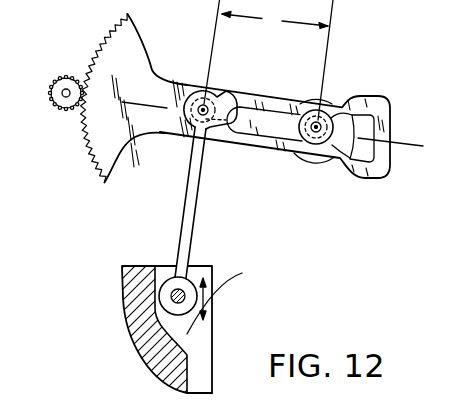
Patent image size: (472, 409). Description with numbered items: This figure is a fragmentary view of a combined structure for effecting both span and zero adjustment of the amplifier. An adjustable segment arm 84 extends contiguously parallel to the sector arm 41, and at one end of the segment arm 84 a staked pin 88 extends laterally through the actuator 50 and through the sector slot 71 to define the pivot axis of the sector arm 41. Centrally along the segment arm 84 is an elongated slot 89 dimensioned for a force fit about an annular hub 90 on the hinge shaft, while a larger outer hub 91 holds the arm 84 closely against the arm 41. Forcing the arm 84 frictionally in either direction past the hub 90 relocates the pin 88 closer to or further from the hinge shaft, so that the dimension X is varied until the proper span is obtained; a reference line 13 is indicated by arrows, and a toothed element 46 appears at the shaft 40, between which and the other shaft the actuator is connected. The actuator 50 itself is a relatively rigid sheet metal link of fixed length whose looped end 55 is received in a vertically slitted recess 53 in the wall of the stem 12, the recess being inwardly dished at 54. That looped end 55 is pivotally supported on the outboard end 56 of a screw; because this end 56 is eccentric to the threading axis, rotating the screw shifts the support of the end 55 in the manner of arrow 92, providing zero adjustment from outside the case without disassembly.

The stem 12 is at (157, 365).
The axis line 13 is at (136, 113).
The shaft 40 is at (63, 96).
The sector arm 41 is at (132, 55).
The gear teeth 46 is at (57, 78).
The actuator 50 is at (192, 219).
The vertically slitted recess 53 is at (200, 382).
The inwardly dished portion 54 is at (188, 335).
The looped end 55 is at (171, 278).
The outboard end of screw 56 is at (171, 298).
The sector slot 71 is at (173, 132).
The segment arm 84 is at (246, 94).
The staked pin 88 is at (201, 103).
The elongated slot 89 is at (250, 128).
The annular hub 90 is at (316, 148).
The outer hub 91 is at (319, 121).
The arrow 92 is at (228, 291).
The dimension X is at (268, 60).